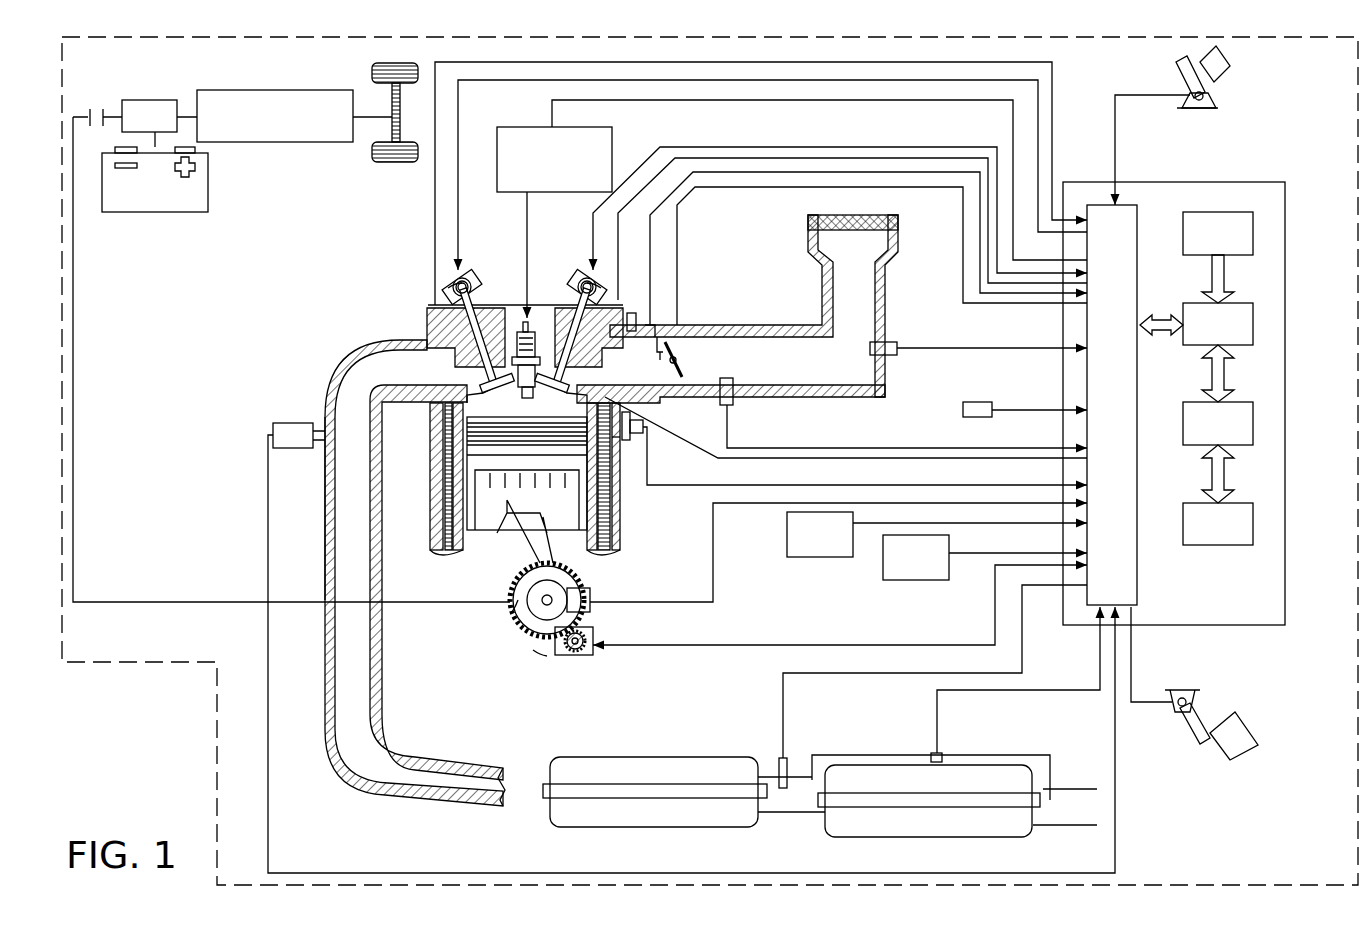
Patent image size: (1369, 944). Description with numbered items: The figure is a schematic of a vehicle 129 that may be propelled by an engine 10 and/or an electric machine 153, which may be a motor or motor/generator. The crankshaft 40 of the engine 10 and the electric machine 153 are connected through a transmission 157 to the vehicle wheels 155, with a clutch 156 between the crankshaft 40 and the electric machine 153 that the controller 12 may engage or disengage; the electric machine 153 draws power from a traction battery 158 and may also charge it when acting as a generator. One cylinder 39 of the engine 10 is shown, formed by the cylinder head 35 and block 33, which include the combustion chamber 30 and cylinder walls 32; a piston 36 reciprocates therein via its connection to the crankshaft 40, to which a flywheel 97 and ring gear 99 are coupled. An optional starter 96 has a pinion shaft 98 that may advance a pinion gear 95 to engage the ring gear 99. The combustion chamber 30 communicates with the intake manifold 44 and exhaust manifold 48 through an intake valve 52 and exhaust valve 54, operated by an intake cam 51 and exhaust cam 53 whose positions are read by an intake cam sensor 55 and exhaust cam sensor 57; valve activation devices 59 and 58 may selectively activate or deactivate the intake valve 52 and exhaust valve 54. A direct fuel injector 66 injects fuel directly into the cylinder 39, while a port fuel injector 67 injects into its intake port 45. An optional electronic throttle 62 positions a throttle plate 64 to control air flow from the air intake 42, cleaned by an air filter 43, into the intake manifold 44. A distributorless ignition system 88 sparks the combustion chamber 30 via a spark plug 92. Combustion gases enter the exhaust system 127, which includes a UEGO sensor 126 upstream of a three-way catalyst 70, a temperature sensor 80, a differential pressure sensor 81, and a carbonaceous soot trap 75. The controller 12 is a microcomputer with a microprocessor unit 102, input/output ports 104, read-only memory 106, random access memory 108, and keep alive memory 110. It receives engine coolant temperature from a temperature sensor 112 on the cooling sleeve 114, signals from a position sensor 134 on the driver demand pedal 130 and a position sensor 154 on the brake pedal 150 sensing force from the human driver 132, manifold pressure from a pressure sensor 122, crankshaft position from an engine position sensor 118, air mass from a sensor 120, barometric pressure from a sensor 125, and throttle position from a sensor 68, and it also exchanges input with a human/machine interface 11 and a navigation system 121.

The engine 10 is at (362, 258).
The human/machine interface 11 is at (985, 557).
The controller 12 is at (1275, 182).
The combustion chamber 30 is at (463, 490).
The cylinder walls 32 is at (465, 550).
The block 33 is at (428, 448).
The cylinder head 35 is at (427, 306).
The piston 36 is at (508, 520).
The cylinder 39 is at (500, 575).
The crankshaft 40 is at (528, 630).
The air intake 42 is at (785, 275).
The air filter 43 is at (868, 232).
The intake manifold 44 is at (652, 375).
The intake port 45 is at (748, 376).
The exhaust manifold 48 is at (410, 381).
The intake cam 51 is at (583, 298).
The intake valve 52 is at (566, 376).
The exhaust cam 53 is at (462, 276).
The exhaust valve 54 is at (421, 341).
The intake cam sensor 55 is at (607, 296).
The exhaust cam sensor 57 is at (448, 290).
The valve activation device 58 is at (470, 297).
The valve activation device 59 is at (581, 300).
The electronic throttle 62 is at (680, 362).
The throttle plate 64 is at (682, 375).
The direct fuel injector 66 is at (637, 430).
The port fuel injector 67 is at (635, 310).
The throttle position sensor 68 is at (672, 327).
The three-way catalyst 70 is at (618, 757).
The carbonaceous soot trap 75 is at (862, 810).
The temperature sensor 80 is at (778, 758).
The differential pressure sensor 81 is at (942, 755).
The distributorless ignition system 88 is at (612, 135).
The spark plug 92 is at (531, 320).
The pinion gear 95 is at (585, 656).
The starter 96 is at (593, 633).
The flywheel 97 is at (512, 612).
The pinion shaft 98 is at (565, 655).
The ring gear 99 is at (533, 650).
The microprocessor unit 102 is at (1253, 325).
The input/output ports 104 is at (1140, 212).
The read-only memory 106 is at (1253, 232).
The random access memory 108 is at (1253, 420).
The keep alive memory 110 is at (1253, 520).
The temperature sensor 112 is at (614, 438).
The cooling sleeve 114 is at (620, 503).
The engine position sensor 118 is at (592, 592).
The air mass sensor 120 is at (897, 347).
The navigation system 121 is at (937, 534).
The pressure sensor 122 is at (722, 403).
The barometric pressure sensor 125 is at (985, 402).
The universal exhaust gas oxygen sensor 126 is at (273, 425).
The exhaust system 127 is at (318, 398).
The vehicle 129 is at (98, 662).
The driver demand pedal 130 is at (1178, 76).
The human driver 132 is at (1228, 60).
The position sensor 134 is at (1215, 97).
The brake pedal 150 is at (1212, 745).
The electric machine 153 is at (160, 100).
The position sensor 154 is at (1170, 700).
The vehicle wheels 155 is at (373, 73).
The clutch 156 is at (103, 108).
The transmission 157 is at (293, 142).
The traction battery 158 is at (152, 212).